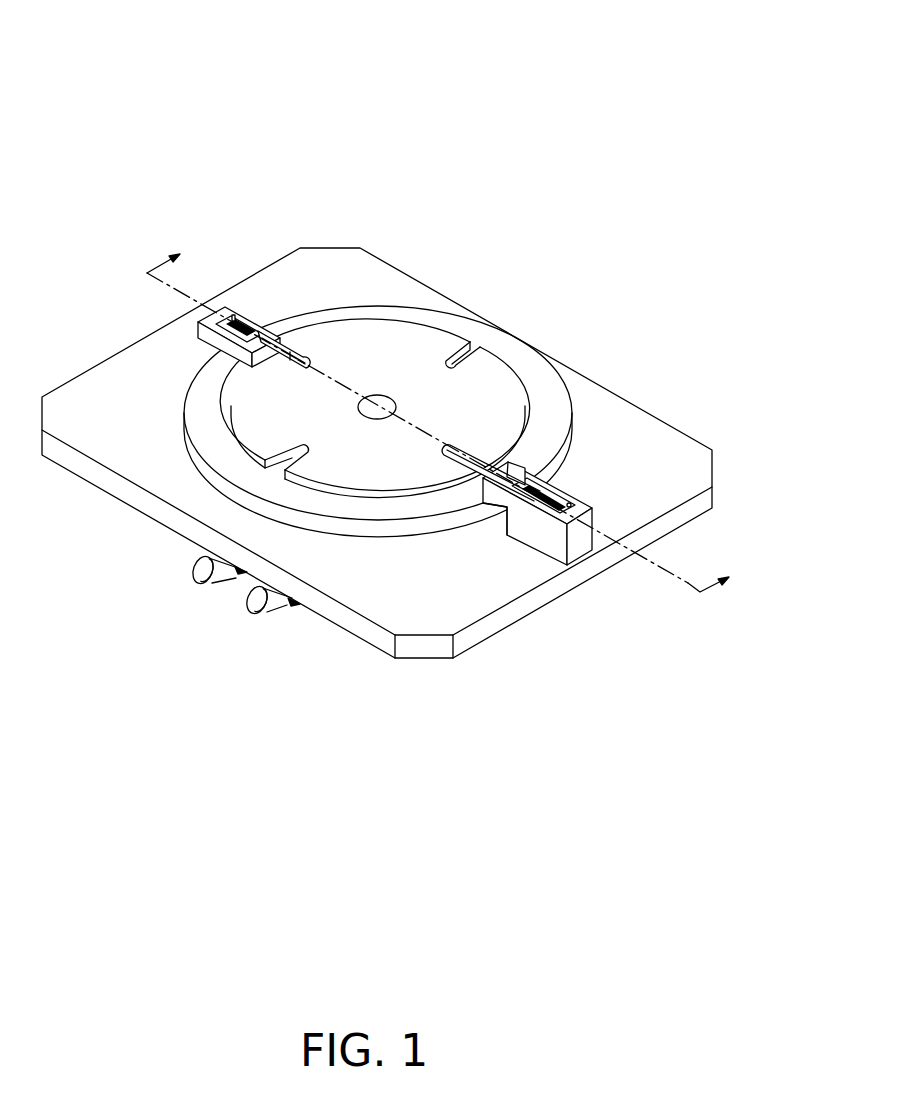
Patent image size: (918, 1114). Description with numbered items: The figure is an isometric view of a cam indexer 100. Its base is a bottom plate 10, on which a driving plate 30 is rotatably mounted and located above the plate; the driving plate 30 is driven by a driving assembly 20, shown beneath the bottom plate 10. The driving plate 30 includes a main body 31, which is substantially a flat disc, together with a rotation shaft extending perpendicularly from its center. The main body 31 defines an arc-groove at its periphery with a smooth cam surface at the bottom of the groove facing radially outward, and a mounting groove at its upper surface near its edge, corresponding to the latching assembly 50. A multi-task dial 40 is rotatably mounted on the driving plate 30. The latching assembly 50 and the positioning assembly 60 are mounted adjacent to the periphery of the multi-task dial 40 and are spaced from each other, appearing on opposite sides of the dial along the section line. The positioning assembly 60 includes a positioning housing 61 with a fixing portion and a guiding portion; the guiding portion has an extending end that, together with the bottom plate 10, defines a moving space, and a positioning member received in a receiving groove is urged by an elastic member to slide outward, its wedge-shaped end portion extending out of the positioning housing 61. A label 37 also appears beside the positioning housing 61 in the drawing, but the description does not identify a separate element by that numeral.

The cam indexer 100 is at (372, 31).
The bottom plate 10 is at (363, 272).
The driving assembly 20 is at (256, 603).
The driving plate 30 is at (367, 460).
The main body 31 is at (225, 470).
The multi-task dial 40 is at (402, 352).
The latching assembly 50 is at (205, 337).
The positioning assembly 60 is at (534, 560).
The positioning housing 61 is at (496, 510).
The pin rod 37 is at (496, 510).